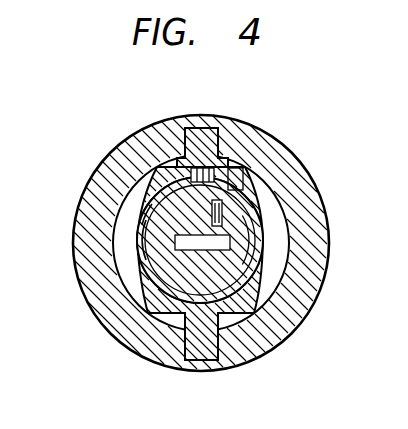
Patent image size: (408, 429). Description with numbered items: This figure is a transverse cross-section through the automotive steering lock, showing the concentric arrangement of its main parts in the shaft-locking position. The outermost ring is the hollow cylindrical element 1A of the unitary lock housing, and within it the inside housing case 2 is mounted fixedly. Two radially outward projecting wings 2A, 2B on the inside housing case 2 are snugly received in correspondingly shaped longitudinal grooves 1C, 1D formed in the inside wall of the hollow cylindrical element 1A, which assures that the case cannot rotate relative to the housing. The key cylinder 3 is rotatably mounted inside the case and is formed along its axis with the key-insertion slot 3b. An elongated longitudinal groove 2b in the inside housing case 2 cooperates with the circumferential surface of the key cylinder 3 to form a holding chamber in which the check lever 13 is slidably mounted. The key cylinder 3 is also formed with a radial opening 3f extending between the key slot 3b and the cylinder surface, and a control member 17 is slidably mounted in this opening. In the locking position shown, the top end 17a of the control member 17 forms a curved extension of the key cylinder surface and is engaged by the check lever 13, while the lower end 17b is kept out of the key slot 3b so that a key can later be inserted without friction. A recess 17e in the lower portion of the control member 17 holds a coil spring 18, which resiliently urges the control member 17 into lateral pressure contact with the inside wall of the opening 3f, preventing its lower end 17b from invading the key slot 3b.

The hollow cylindrical element 1A is at (268, 362).
The longitudinal groove 1C is at (220, 337).
The longitudinal groove 1D is at (220, 137).
The inside housing case 2 is at (160, 362).
The wing 2A is at (202, 350).
The wing 2B is at (213, 128).
The longitudinal groove 2b is at (184, 152).
The check lever 13 is at (203, 168).
The control member 17 is at (178, 165).
The top end of control member 17a is at (243, 181).
The lower end of control member 17b is at (155, 242).
The recess 17e is at (250, 265).
The coil spring 18 is at (222, 211).
The key cylinder 3 is at (165, 290).
The key-insertion slot 3b is at (176, 251).
The radial opening 3f is at (162, 204).